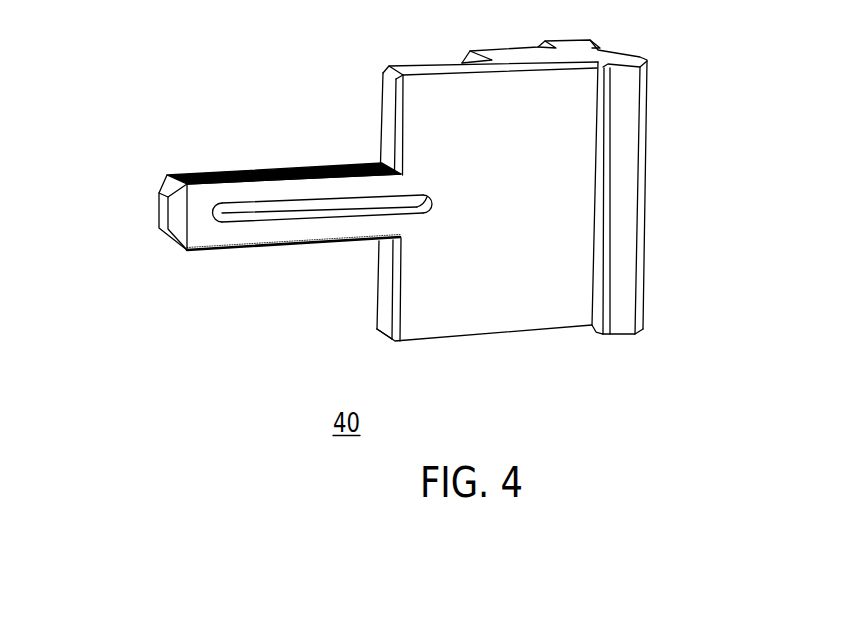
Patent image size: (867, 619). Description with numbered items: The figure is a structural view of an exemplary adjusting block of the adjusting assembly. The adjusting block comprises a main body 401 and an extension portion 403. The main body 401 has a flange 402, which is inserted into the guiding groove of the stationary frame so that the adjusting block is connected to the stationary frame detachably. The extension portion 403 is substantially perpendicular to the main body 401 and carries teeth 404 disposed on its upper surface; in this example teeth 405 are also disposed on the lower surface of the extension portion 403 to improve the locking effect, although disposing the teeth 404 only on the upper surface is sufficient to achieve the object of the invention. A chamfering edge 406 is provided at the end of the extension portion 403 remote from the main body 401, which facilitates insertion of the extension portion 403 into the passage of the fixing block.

The main body 401 is at (502, 308).
The flange 402 is at (625, 170).
The extension portion 403 is at (203, 237).
The teeth 404 is at (253, 170).
The teeth 405 is at (315, 245).
The chamfering edge 406 is at (177, 223).